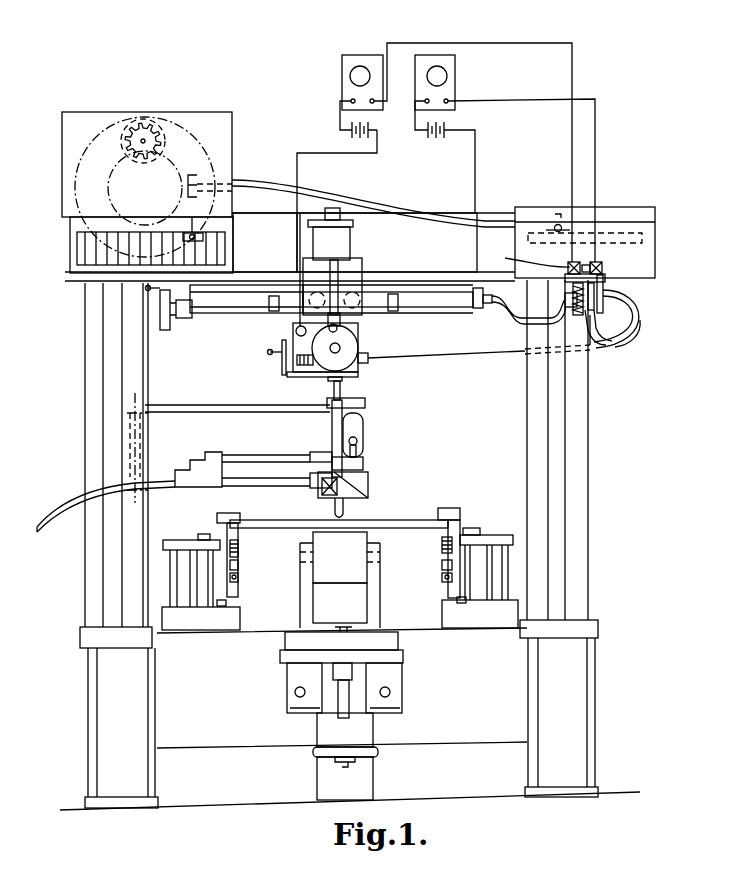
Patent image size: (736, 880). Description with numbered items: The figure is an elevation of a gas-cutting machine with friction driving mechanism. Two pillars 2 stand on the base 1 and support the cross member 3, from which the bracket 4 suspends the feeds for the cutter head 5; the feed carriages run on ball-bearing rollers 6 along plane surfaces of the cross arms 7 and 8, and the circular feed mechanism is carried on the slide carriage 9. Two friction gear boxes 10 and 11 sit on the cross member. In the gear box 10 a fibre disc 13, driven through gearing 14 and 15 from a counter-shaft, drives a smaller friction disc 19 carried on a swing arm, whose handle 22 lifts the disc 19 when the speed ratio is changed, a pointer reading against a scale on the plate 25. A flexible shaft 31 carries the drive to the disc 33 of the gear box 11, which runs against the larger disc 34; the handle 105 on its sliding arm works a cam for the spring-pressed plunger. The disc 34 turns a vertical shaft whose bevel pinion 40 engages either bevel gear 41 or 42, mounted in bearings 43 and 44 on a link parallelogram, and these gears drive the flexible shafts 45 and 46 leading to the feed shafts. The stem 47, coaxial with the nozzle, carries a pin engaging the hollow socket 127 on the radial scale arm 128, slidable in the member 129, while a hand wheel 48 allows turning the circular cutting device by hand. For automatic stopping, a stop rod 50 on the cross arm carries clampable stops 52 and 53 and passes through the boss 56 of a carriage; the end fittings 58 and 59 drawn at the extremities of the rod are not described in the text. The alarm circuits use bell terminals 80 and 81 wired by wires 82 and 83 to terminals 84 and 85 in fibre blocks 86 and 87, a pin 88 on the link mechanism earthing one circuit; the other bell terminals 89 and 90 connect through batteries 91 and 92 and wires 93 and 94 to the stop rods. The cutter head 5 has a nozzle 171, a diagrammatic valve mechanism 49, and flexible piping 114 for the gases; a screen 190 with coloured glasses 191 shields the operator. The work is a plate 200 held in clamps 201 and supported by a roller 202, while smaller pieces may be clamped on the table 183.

The base 1 is at (128, 720).
The pillars 2 is at (95, 467).
The cross member 3 is at (424, 212).
The bracket 4 is at (366, 213).
The cutter head 5 is at (357, 462).
The ball-bearing rollers 6 is at (372, 278).
The cross arm 7 is at (222, 297).
The cross arm 8 is at (343, 318).
The slide carriage 9 is at (296, 332).
The friction gear box 10 is at (92, 128).
The friction gear box 11 is at (653, 228).
The disc 13 is at (192, 127).
The gearing 14 is at (137, 122).
The gearing 15 is at (161, 124).
The friction disc 19 is at (198, 176).
The handle 22 is at (204, 237).
The plate 25 is at (93, 258).
The flexible shaft 31 is at (267, 181).
The disc 33 is at (557, 214).
The disc 34 is at (642, 236).
The bevel pinion 40 is at (592, 340).
The bevel gear 41 is at (596, 347).
The bevel gear 42 is at (637, 323).
The bearing 43 is at (570, 305).
The bearing 44 is at (605, 288).
The flexible shaft 45 is at (513, 311).
The flexible shaft 46 is at (413, 357).
The stem 47 is at (328, 414).
The hand wheel 48 is at (282, 355).
The valve mechanism 49 is at (212, 458).
The stop rod 50 is at (447, 300).
The stop 52 is at (274, 296).
The stop 53 is at (396, 296).
The boss 56 is at (336, 292).
The cap 58 is at (186, 318).
The fitting 59 is at (480, 308).
The bell terminal 80 is at (371, 100).
The bell terminal 81 is at (448, 100).
The wire 82 is at (527, 43).
The wire 83 is at (492, 98).
The terminal 84 is at (527, 252).
The terminal 85 is at (605, 270).
The fibre block 86 is at (577, 265).
The fibre block 87 is at (603, 268).
The pin 88 is at (590, 263).
The bell terminal 89 is at (351, 101).
The bell terminal 90 is at (426, 100).
The battery 91 is at (352, 130).
The battery 92 is at (436, 135).
The wire 93 is at (475, 191).
The wire 94 is at (320, 153).
The handle 105 is at (561, 227).
The flexible piping 114 is at (60, 513).
The hollow socket 127 is at (341, 385).
The radial scale arm 128 is at (343, 379).
The member 129 is at (297, 379).
The nozzle 171 is at (345, 512).
The table 183 is at (292, 645).
The screen 190 is at (366, 483).
The coloured glasses 191 is at (320, 491).
The plate 200 is at (414, 528).
The clamps 201 is at (224, 522).
The roller 202 is at (340, 577).